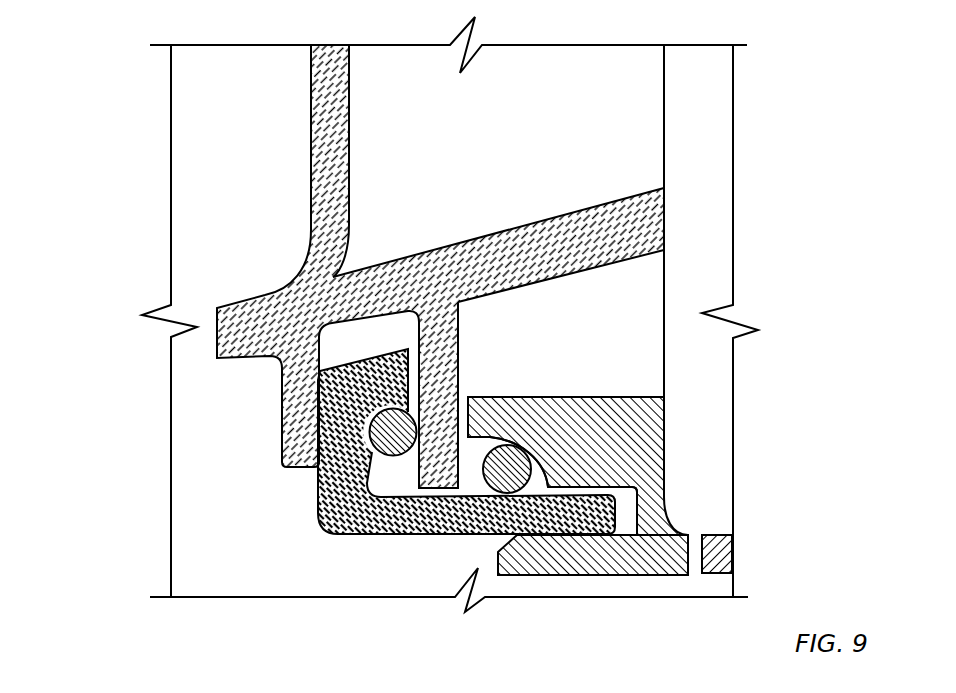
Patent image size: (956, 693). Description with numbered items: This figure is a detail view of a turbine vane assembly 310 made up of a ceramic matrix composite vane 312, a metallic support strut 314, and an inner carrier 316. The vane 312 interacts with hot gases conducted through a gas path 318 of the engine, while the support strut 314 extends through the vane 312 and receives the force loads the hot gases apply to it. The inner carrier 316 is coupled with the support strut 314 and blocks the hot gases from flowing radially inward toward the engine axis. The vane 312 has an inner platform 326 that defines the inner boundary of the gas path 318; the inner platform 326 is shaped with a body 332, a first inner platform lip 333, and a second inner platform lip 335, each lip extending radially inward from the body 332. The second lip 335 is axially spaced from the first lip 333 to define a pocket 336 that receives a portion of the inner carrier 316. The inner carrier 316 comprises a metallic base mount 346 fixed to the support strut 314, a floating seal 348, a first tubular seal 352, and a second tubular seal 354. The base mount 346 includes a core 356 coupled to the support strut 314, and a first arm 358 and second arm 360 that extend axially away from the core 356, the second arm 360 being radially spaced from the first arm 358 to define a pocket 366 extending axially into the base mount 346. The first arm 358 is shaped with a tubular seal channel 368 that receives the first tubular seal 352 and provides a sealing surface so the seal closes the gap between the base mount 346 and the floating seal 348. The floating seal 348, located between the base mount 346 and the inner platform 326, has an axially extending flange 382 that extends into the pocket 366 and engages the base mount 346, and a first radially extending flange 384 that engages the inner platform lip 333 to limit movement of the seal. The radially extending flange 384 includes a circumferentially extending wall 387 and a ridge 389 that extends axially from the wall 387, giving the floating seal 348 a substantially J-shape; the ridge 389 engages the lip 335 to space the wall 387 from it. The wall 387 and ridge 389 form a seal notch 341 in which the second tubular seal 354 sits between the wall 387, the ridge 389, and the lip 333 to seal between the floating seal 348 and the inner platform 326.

The turbine vane assembly 310 is at (200, 153).
The ceramic matrix composite vane 312 is at (250, 80).
The metallic support strut 314 is at (697, 43).
The inner carrier 316 is at (297, 568).
The gas path 318 is at (262, 122).
The inner platform 326 is at (243, 232).
The body 332 is at (240, 297).
The first inner platform lip 333 is at (277, 373).
The second inner platform lip 335 is at (462, 304).
The pocket 336 is at (360, 340).
The seal notch 341 is at (363, 407).
The base mount 346 is at (620, 588).
The floating seal 348 is at (290, 533).
The first tubular seal 352 is at (502, 495).
The second tubular seal 354 is at (423, 412).
The core 356 is at (670, 577).
The first arm 358 is at (612, 392).
The second arm 360 is at (525, 577).
The pocket 366 is at (627, 520).
The tubular seal channel 368 is at (518, 425).
The axially extending flange 382 is at (388, 537).
The first radially extending flange 384 is at (282, 480).
The circumferentially extending wall 387 is at (317, 488).
The ridge 389 is at (392, 348).